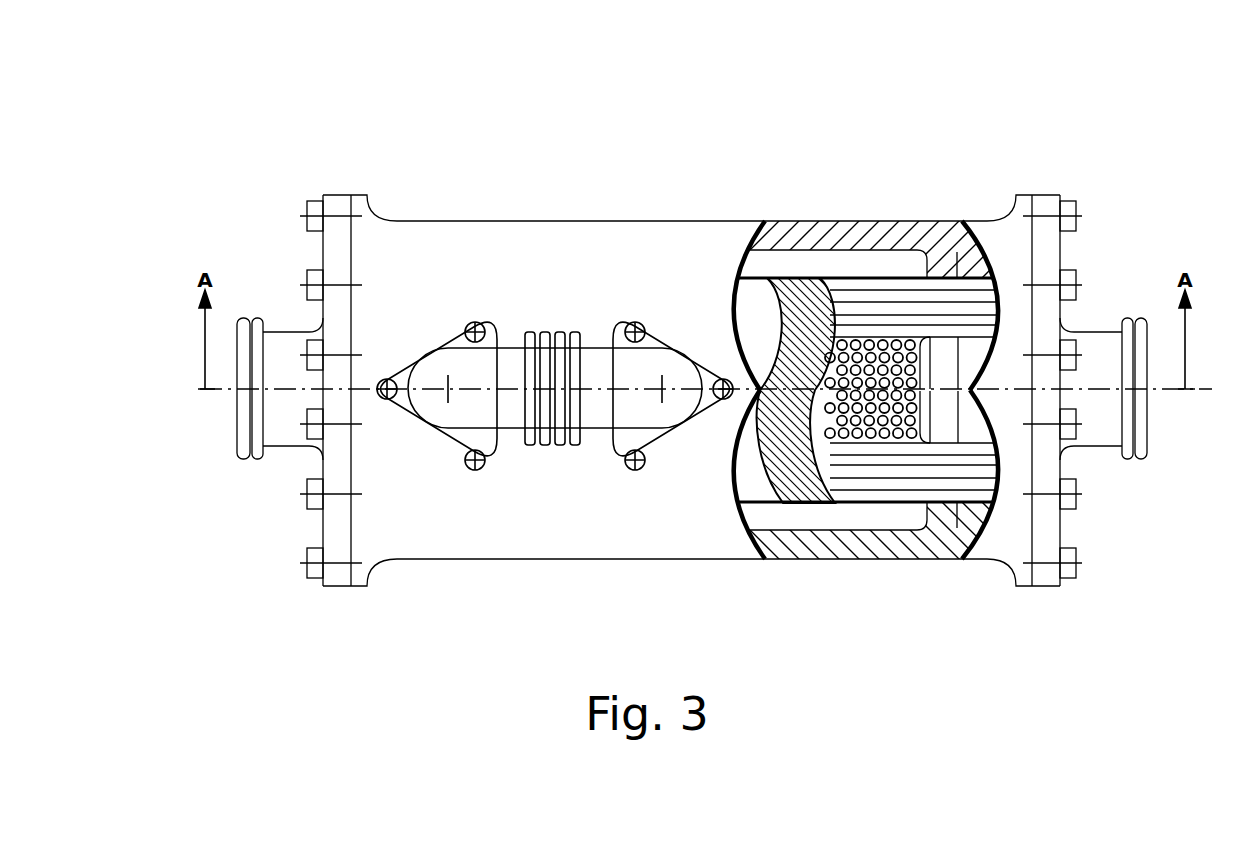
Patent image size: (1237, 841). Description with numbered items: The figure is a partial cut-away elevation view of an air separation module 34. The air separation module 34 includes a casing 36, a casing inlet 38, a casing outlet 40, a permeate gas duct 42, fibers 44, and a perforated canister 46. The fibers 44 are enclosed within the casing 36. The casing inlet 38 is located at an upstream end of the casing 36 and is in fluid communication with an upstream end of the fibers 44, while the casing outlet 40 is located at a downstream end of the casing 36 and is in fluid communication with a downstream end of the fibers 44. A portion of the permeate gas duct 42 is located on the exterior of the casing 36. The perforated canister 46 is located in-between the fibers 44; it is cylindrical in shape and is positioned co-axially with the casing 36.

The air separation module 34 is at (762, 100).
The casing 36 is at (538, 221).
The casing inlet 38 is at (280, 331).
The casing outlet 40 is at (1123, 318).
The permeate gas duct 42 is at (596, 440).
The fibers 44 is at (872, 266).
The perforated canister 46 is at (877, 458).